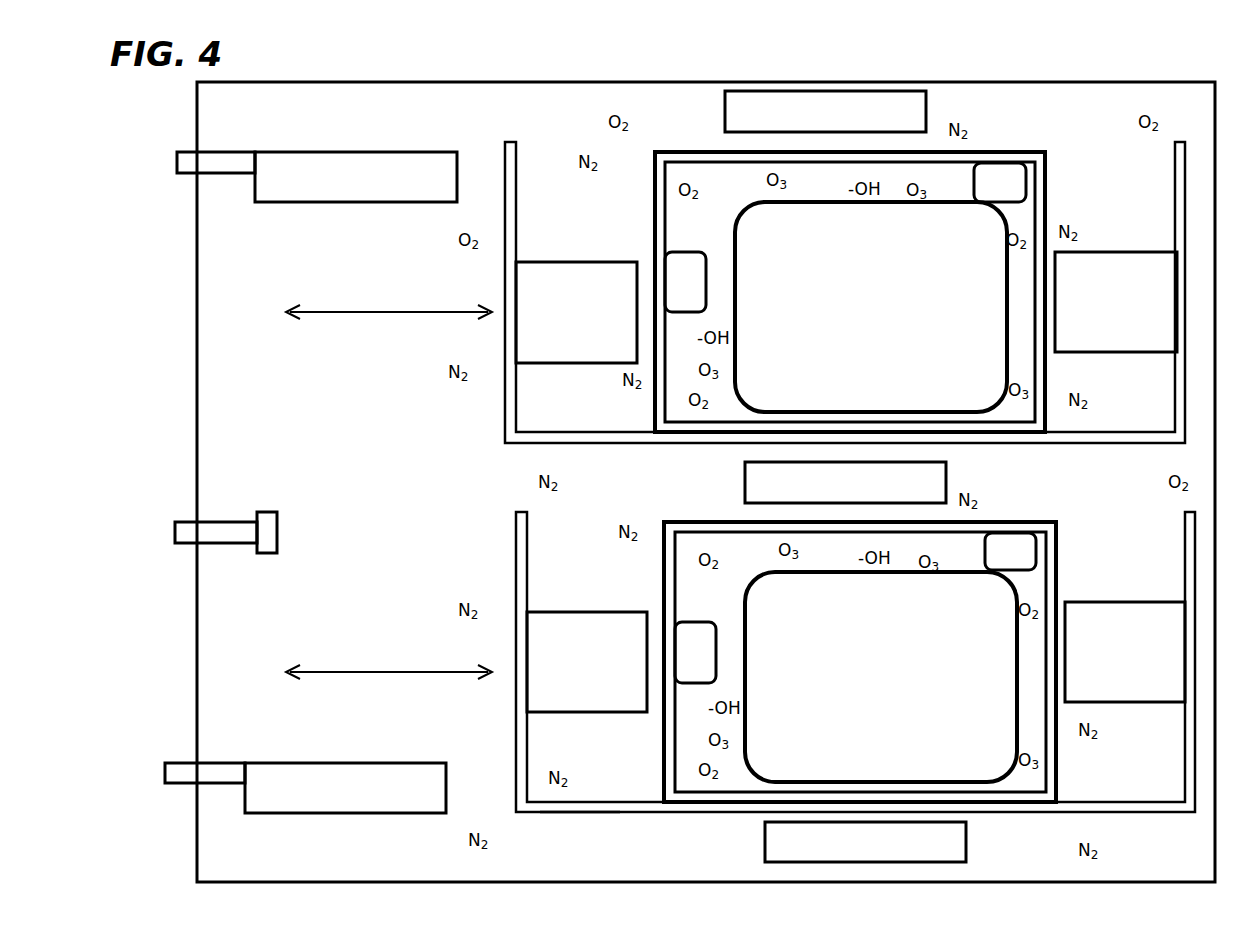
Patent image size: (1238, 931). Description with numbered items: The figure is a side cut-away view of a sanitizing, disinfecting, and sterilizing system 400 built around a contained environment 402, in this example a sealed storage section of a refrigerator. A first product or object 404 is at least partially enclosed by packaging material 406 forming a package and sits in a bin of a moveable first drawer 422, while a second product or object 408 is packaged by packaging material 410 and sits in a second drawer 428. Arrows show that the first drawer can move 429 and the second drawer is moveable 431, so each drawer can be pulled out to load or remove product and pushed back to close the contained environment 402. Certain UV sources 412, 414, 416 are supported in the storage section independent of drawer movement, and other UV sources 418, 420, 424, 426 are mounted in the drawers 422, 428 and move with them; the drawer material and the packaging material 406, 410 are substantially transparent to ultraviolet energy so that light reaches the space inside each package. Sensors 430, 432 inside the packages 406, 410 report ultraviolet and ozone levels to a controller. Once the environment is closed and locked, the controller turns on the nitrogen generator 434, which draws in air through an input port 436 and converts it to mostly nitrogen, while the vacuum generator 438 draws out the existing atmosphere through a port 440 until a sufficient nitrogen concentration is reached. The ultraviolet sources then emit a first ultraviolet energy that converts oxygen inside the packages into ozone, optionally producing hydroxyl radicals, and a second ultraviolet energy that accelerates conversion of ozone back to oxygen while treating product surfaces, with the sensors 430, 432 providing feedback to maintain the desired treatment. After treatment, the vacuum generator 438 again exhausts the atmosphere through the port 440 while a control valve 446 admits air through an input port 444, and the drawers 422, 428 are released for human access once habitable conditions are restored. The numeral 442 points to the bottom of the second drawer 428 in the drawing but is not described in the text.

The sanitizing, disinfecting, and sterilizing system 400 is at (763, 62).
The contained environment 402 is at (455, 82).
The first product or object 404 is at (768, 206).
The packaging material 406 is at (1046, 165).
The second product or object 408 is at (755, 722).
The packaging material 410 is at (1057, 526).
The UV source 412 is at (725, 112).
The UV source 414 is at (745, 485).
The UV source 416 is at (765, 832).
The UV source 418 is at (556, 352).
The UV source 420 is at (1093, 342).
The first drawer 422 is at (508, 413).
The UV source 424 is at (622, 612).
The UV source 426 is at (1165, 612).
The second drawer 428 is at (518, 545).
The drawer movement 429 is at (325, 312).
The sensor 430 is at (985, 165).
The drawer movement 431 is at (345, 672).
The sensor 432 is at (995, 535).
The nitrogen generator 434 is at (425, 763).
The input port 436 is at (206, 763).
The vacuum generator 438 is at (438, 152).
The port 440 is at (212, 152).
The tray bottom 442 is at (568, 812).
The input port 444 is at (205, 522).
The control valve 446 is at (266, 522).